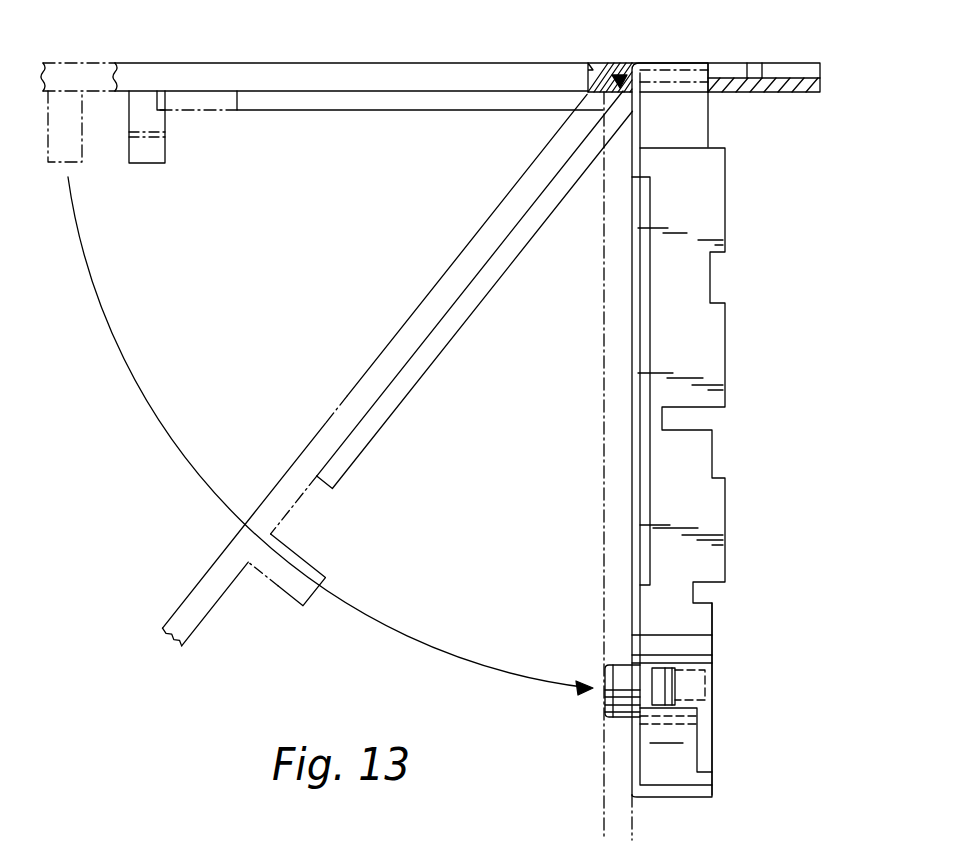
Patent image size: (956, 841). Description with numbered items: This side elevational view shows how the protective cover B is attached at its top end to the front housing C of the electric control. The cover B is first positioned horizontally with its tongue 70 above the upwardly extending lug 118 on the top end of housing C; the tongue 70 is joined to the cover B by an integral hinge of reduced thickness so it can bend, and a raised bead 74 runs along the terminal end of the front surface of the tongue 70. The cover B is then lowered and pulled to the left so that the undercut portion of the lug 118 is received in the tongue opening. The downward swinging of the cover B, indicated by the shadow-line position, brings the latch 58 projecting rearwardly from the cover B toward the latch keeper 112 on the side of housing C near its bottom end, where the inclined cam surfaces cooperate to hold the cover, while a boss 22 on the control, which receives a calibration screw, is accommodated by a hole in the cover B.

The latch 58 is at (148, 153).
The lug 118 is at (670, 62).
The tongue 70 is at (785, 78).
The raised bead 74 is at (810, 65).
The boss 22 is at (608, 692).
The latch keeper 112 is at (660, 688).
The protective cover B is at (443, 63).
The front housing C is at (726, 334).